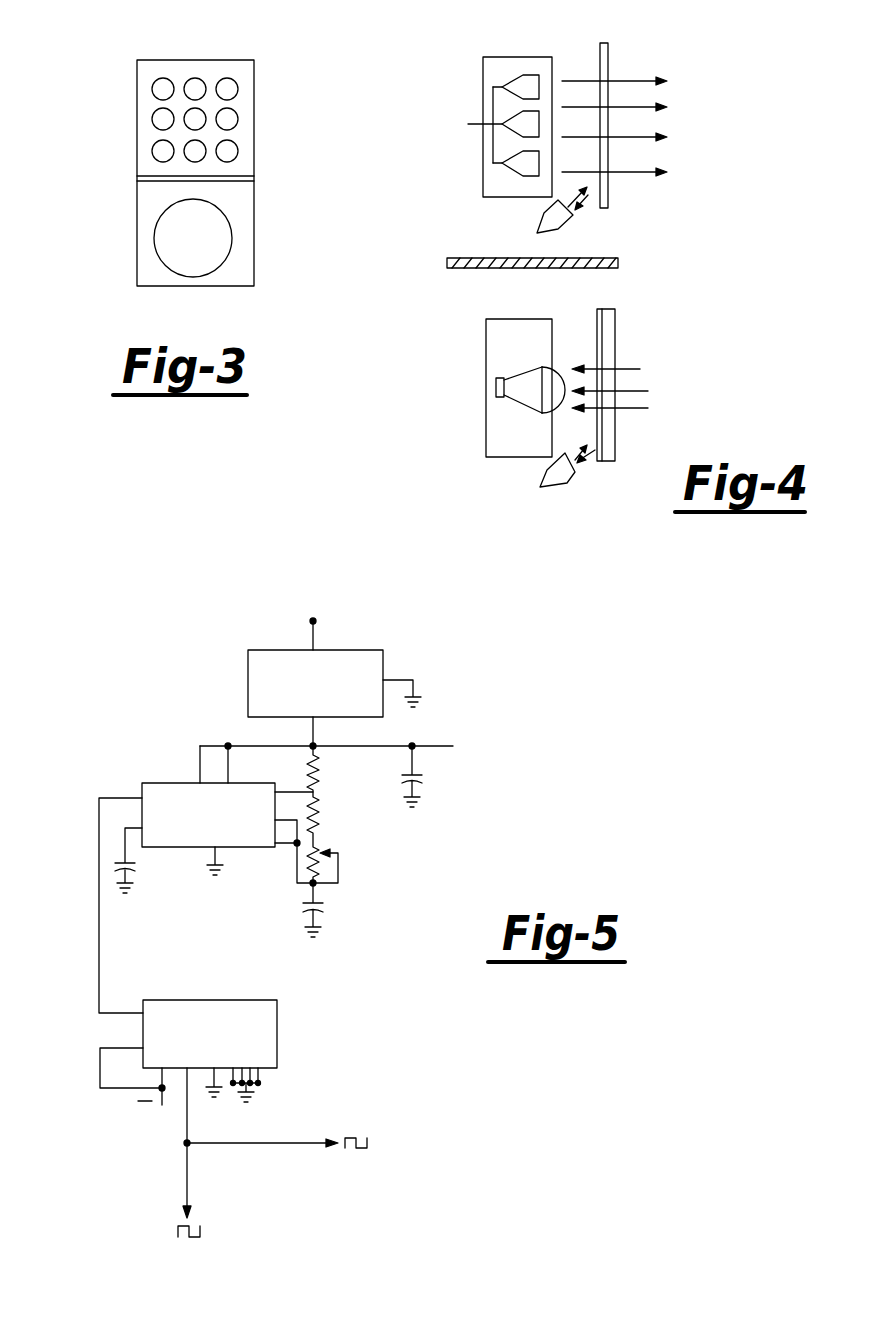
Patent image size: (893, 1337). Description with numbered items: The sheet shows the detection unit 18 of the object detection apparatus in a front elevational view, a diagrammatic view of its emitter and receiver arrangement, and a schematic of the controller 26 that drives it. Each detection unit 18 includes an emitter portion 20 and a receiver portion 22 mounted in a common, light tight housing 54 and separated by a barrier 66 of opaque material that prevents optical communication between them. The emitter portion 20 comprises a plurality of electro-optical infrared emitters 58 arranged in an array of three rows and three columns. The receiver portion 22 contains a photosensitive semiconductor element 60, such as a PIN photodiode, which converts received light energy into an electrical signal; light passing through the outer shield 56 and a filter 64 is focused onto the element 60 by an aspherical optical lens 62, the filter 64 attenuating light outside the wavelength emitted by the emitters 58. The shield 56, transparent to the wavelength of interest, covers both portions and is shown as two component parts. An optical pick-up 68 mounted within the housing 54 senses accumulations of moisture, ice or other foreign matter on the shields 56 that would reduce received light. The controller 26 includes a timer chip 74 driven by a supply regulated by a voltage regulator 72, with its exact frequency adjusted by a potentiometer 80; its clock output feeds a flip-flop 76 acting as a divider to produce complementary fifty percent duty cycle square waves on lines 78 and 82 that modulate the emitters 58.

In FIG. 3, the detection unit 18 is at (120, 114).
In FIG. 3, the emitter portion 20 is at (236, 89).
In FIG. 4, the emitter portion 20 is at (516, 101).
In FIG. 3, the receiver portion 22 is at (160, 224).
In FIG. 4, the receiver portion 22 is at (486, 340).
In FIG. 3, the housing 54 is at (254, 118).
In FIG. 4, the outer shield 56 is at (608, 198).
In FIG. 3, the electro-optical infrared emitters 58 is at (163, 78).
In FIG. 4, the electro-optical infrared emitters 58 is at (528, 79).
In FIG. 4, the photosensitive semiconductor element 60 is at (496, 390).
In FIG. 4, the aspherical optical lens 62 is at (555, 375).
In FIG. 4, the filter 64 is at (597, 327).
In FIG. 3, the barrier 66 is at (150, 180).
In FIG. 4, the barrier 66 is at (458, 257).
In FIG. 4, the optical pick-up 68 is at (540, 217).
In FIG. 5, the controller 26 is at (174, 710).
In FIG. 5, the voltage regulator 72 is at (358, 660).
In FIG. 5, the timer chip 74 is at (152, 782).
In FIG. 5, the flip-flop 76 is at (213, 1000).
In FIG. 5, the line 78 is at (187, 1174).
In FIG. 5, the potentiometer 80 is at (334, 853).
In FIG. 5, the line 82 is at (268, 1147).